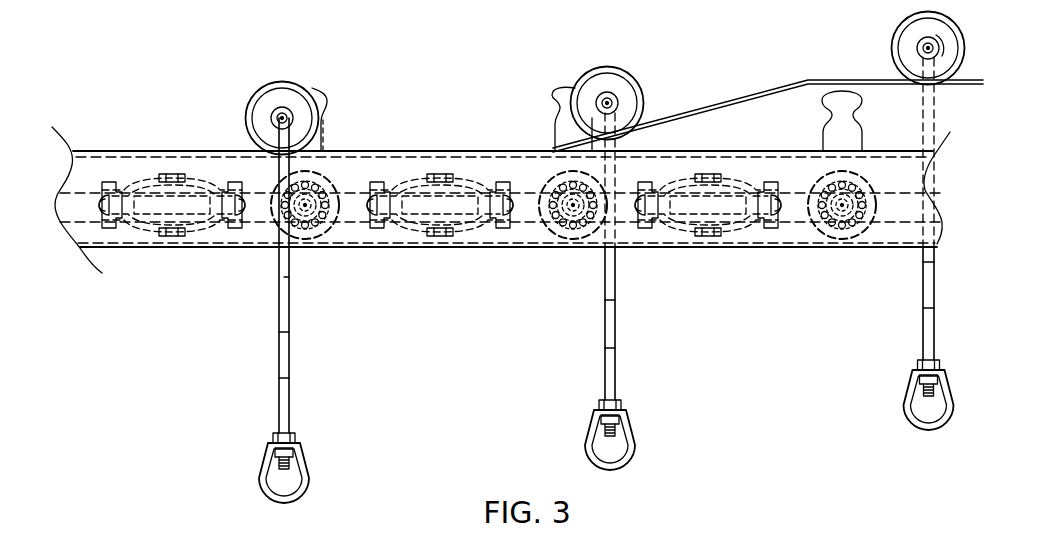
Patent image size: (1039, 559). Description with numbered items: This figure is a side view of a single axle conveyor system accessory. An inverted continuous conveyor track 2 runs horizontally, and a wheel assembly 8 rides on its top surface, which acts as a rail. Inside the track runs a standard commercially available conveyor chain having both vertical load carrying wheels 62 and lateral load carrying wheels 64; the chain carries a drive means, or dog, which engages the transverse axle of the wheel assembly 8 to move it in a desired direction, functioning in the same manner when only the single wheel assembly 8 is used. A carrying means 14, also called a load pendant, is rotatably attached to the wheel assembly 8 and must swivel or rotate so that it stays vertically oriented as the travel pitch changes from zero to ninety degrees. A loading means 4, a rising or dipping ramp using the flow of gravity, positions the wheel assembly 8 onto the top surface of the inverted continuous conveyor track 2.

The inverted continuous conveyor track 2 is at (188, 248).
The loading means 4 is at (730, 100).
The wheel assembly 8 is at (907, 25).
The carrying means 14 is at (616, 309).
The vertical load carrying wheels 62 is at (334, 163).
The lateral load carrying wheels 64 is at (488, 247).